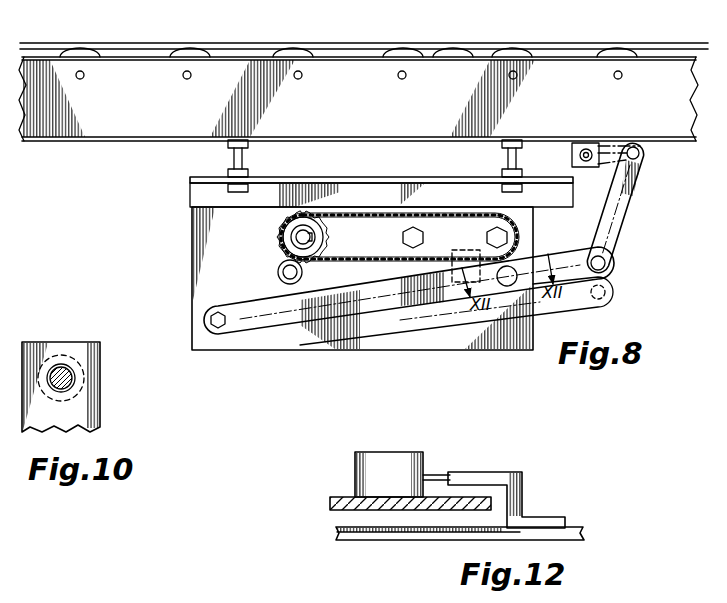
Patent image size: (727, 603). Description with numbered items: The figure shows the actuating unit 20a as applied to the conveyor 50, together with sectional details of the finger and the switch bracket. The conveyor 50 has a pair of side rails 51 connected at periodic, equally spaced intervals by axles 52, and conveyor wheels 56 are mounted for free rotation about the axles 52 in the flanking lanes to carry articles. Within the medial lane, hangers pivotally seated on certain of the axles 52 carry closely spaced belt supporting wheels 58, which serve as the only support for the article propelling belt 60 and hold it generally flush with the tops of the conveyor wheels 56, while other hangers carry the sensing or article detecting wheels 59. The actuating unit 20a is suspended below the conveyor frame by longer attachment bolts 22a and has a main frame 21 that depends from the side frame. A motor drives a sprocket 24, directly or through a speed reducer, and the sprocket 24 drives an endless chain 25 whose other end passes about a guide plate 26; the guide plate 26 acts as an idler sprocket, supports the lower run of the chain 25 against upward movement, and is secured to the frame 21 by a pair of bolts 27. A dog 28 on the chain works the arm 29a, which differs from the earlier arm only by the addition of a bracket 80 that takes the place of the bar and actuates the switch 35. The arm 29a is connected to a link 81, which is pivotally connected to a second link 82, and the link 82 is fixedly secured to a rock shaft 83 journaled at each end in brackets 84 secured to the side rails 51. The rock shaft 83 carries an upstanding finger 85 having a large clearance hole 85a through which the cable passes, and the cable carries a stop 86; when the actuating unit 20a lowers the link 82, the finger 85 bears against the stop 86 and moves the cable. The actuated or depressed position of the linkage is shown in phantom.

In FIG. 8, the conveyor 50 is at (60, 143).
In FIG. 8, the side rails 51 is at (686, 94).
In FIG. 8, the axles 52 is at (301, 80).
In FIG. 8, the conveyor wheels 56 is at (121, 23).
In FIG. 8, the belt supporting wheels 58 is at (258, 44).
In FIG. 8, the sensing wheels 59 is at (478, 47).
In FIG. 8, the article propelling belt 60 is at (662, 46).
In FIG. 8, the attachment bolts 22a is at (232, 156).
In FIG. 8, the actuating unit 20a is at (190, 299).
In FIG. 12, the actuating unit 20a is at (327, 514).
In FIG. 8, the main frame 21 is at (296, 350).
In FIG. 12, the main frame 21 is at (328, 502).
In FIG. 8, the sprocket 24 is at (332, 247).
In FIG. 8, the endless chain 25 is at (290, 237).
In FIG. 8, the guide plate 26 is at (362, 256).
In FIG. 8, the bolts 27 is at (495, 226).
In FIG. 8, the dog 28 is at (278, 272).
In FIG. 8, the arm 29a is at (427, 300).
In FIG. 12, the arm 29a is at (408, 541).
In FIG. 8, the switch 35 is at (478, 251).
In FIG. 12, the switch 35 is at (394, 456).
In FIG. 8, the bracket 80 is at (592, 257).
In FIG. 12, the bracket 80 is at (522, 490).
In FIG. 8, the link 81 is at (618, 238).
In FIG. 8, the second link 82 is at (641, 150).
In FIG. 8, the rock shaft 83 is at (587, 168).
In FIG. 8, the brackets 84 is at (573, 156).
In FIG. 10, the finger 85 is at (100, 409).
In FIG. 10, the clearance hole 85a is at (63, 366).
In FIG. 10, the stop 86 is at (50, 352).